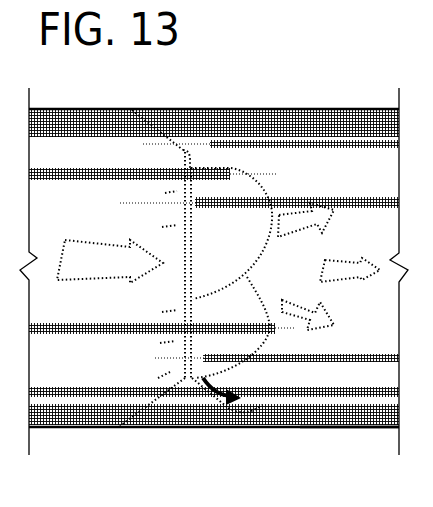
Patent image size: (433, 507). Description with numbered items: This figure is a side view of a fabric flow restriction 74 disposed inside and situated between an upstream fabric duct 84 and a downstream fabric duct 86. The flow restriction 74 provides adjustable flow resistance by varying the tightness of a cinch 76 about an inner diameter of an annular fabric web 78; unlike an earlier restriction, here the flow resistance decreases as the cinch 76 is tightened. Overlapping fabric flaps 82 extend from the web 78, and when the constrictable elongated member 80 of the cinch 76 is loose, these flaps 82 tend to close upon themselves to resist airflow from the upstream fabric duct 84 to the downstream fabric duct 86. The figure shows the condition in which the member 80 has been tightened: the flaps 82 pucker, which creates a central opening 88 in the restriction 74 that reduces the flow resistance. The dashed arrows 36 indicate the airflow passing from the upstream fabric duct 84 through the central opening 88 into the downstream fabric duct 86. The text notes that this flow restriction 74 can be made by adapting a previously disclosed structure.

The airflow direction arrows 36 is at (95, 275).
The flow restriction 74 is at (188, 80).
The cinch 76 is at (182, 152).
The annular fabric web 78 is at (170, 402).
The constrictable elongated member 80 is at (248, 407).
The overlapping fabric flaps 82 is at (233, 190).
The upstream fabric duct 84 is at (58, 428).
The downstream fabric duct 86 is at (357, 430).
The central opening 88 is at (277, 258).